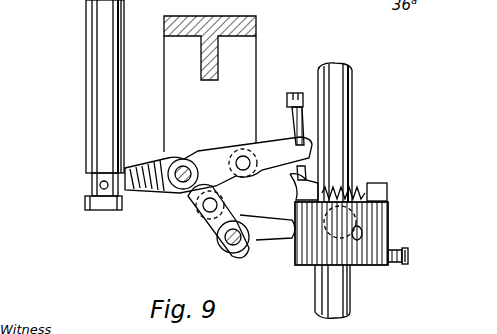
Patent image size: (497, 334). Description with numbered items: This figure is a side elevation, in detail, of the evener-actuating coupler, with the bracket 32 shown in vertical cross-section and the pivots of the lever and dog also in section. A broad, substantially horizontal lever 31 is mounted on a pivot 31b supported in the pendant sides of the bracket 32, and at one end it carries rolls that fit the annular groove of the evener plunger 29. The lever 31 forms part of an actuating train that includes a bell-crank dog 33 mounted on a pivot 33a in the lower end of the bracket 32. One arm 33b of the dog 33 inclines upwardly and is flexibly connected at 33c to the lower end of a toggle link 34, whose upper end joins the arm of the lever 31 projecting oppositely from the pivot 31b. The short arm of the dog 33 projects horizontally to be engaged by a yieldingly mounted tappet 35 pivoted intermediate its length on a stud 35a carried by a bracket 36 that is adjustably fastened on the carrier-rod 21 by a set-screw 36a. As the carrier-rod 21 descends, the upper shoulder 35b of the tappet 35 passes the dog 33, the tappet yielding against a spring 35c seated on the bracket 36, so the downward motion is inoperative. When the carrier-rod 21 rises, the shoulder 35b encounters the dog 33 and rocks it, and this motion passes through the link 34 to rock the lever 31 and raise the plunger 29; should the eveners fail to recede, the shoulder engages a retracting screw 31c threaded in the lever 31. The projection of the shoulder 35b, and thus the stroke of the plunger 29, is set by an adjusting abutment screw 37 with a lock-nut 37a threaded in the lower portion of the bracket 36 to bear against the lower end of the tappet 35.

The carrier-rod 21 is at (356, 102).
The plunger 29 is at (90, 53).
The lever 31 is at (218, 156).
The pivot 31b is at (178, 168).
The retracting screw 31c is at (305, 124).
The bracket 32 is at (246, 57).
The dog 33 is at (221, 235).
The pivot 33a is at (231, 248).
The arm 33b is at (203, 224).
The flexible connection 33c is at (205, 208).
The toggle link 34 is at (246, 193).
The tappet 35 is at (298, 182).
The pivot 35a is at (350, 221).
The shoulder 35b is at (326, 168).
The spring 35c is at (372, 180).
The bracket 36 is at (372, 255).
The set-screw 36a is at (389, 191).
The adjusting abutment screw 37 is at (408, 260).
The lock-nut 37a is at (404, 252).